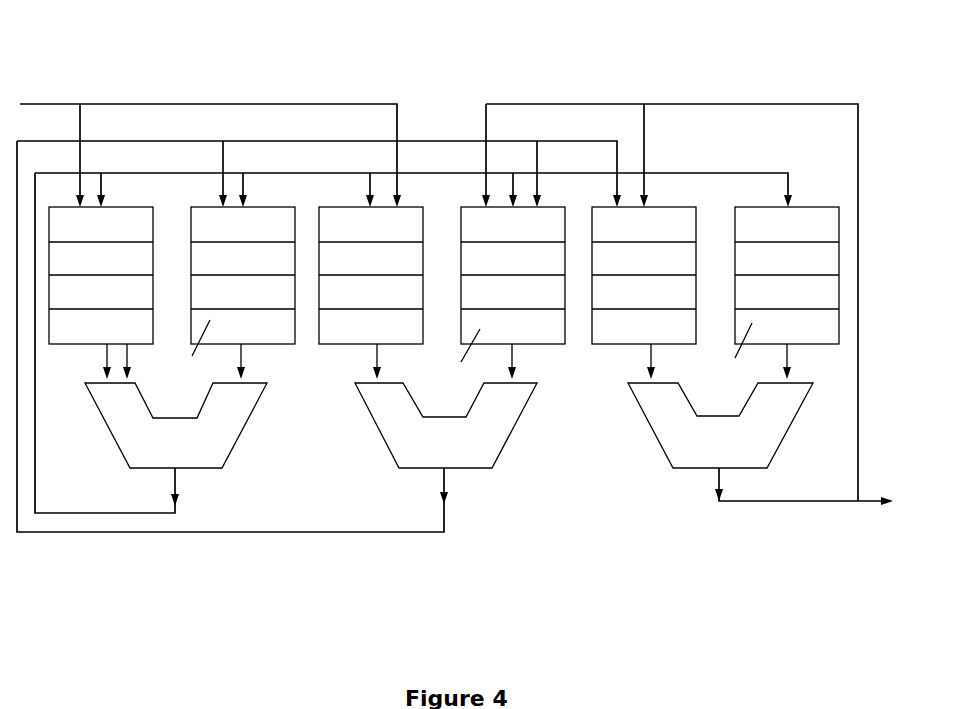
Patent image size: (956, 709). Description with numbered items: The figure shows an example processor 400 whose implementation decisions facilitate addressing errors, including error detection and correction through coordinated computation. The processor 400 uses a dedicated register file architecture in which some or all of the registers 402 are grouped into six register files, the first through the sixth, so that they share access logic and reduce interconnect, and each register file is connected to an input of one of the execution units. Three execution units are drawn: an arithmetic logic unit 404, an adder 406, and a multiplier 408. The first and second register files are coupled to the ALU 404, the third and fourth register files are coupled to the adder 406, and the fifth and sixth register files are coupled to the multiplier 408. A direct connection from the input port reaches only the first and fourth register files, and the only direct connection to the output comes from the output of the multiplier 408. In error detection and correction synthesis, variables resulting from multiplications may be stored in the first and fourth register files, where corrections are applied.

The processor 400 is at (443, 25).
The registers 402 is at (137, 318).
The arithmetic logic unit (ALU) 404 is at (223, 437).
The adder 406 is at (497, 437).
The multiplier 408 is at (680, 450).